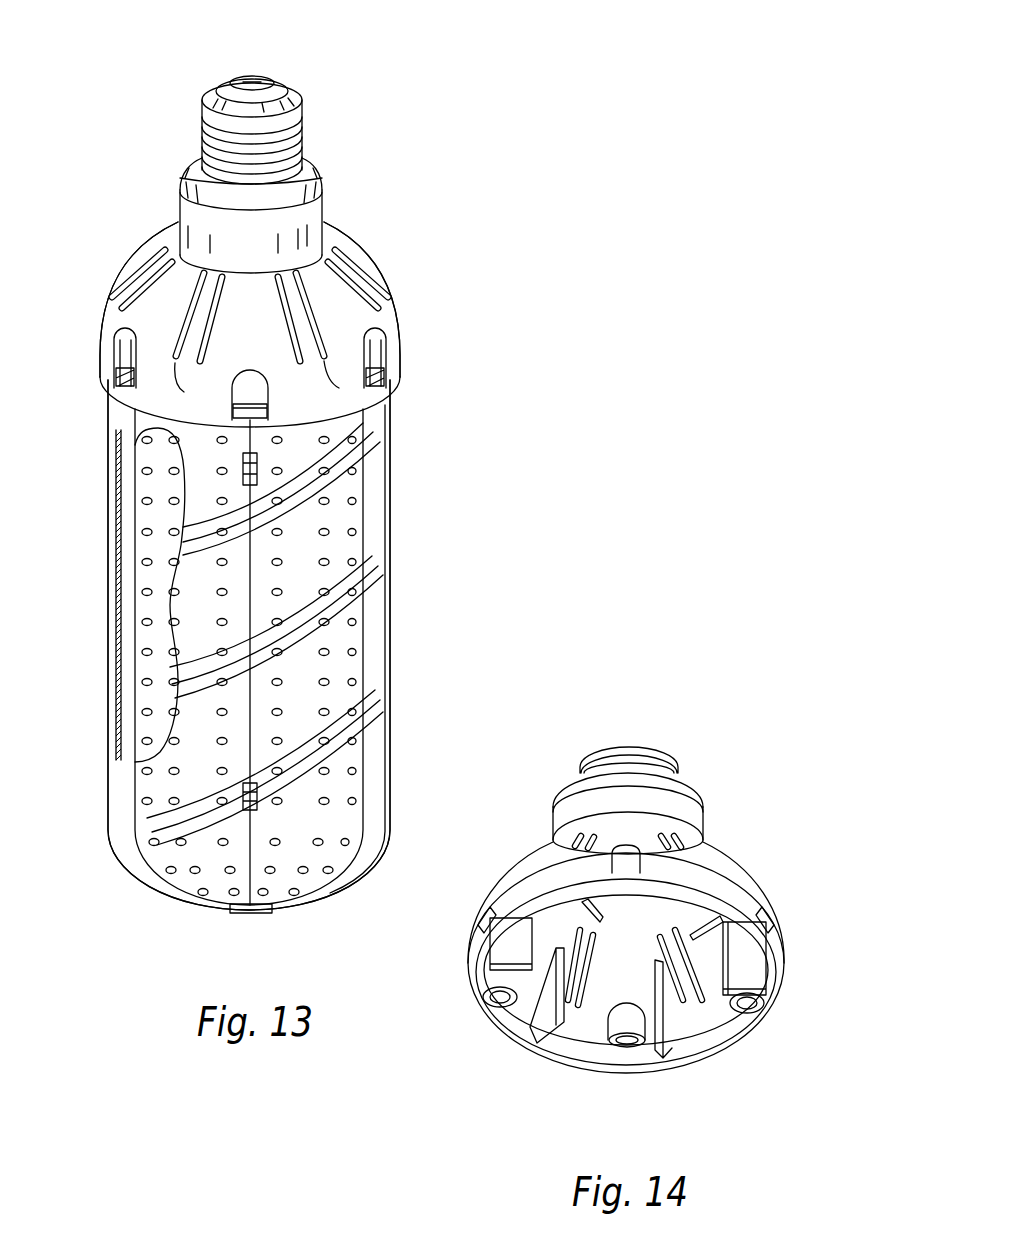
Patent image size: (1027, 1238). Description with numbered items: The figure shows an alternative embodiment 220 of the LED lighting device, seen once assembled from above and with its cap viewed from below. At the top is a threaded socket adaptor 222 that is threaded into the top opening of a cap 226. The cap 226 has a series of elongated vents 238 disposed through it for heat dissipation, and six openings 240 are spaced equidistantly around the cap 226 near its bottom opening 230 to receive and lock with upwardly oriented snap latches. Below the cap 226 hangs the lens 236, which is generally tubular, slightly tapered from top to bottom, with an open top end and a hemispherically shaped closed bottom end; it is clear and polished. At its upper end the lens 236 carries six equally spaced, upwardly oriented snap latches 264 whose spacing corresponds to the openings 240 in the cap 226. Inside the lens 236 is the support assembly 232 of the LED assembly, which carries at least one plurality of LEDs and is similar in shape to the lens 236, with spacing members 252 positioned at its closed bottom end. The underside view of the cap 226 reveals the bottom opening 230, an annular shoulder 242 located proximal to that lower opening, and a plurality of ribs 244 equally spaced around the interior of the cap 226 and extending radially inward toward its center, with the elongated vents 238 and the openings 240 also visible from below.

In FIG. 13, the alternative embodiment 220 is at (463, 88).
In FIG. 13, the threaded socket adaptor 222 is at (251, 78).
In FIG. 13, the cap 226 is at (398, 307).
In FIG. 14, the cap 226 is at (763, 812).
In FIG. 14, the bottom opening 230 is at (596, 1012).
In FIG. 13, the support assembly 232 is at (140, 576).
In FIG. 13, the lens 236 is at (383, 650).
In FIG. 13, the elongated vents 238 is at (145, 282).
In FIG. 14, the elongated vents 238 is at (570, 845).
In FIG. 13, the openings 240 is at (120, 350).
In FIG. 14, the openings 240 is at (498, 1010).
In FIG. 14, the annular shoulder 242 is at (700, 1042).
In FIG. 14, the ribs 244 is at (583, 904).
In FIG. 13, the spacing members 252 is at (222, 912).
In FIG. 13, the snap latches 264 is at (114, 370).